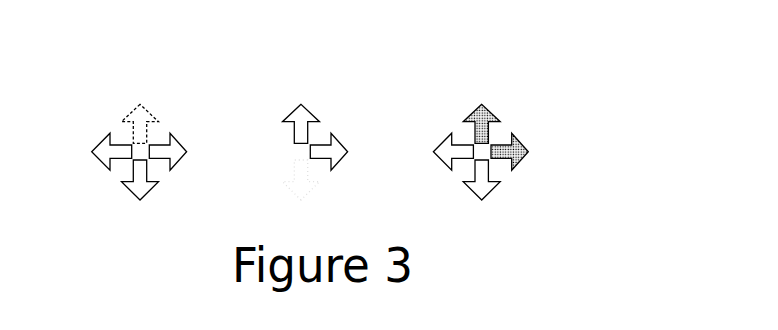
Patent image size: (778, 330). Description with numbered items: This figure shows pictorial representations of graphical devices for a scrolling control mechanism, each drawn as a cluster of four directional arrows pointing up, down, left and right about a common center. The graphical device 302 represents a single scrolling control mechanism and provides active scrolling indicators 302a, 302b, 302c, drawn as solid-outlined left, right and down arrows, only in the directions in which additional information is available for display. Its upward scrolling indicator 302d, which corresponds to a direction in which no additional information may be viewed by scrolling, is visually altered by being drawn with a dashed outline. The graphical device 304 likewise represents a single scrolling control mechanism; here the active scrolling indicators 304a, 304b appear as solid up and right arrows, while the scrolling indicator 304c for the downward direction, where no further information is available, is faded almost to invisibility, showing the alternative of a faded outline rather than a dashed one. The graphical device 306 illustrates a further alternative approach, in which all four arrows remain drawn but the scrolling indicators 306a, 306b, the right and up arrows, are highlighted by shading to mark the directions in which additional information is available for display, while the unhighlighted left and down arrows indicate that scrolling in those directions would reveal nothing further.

The graphical device 302 is at (170, 98).
The active scrolling indicator 302a is at (103, 140).
The active scrolling indicator 302b is at (177, 140).
The active scrolling indicator 302c is at (148, 190).
The scrolling indicator 302d is at (135, 110).
The graphical device 304 is at (333, 97).
The active scrolling indicator 304a is at (292, 113).
The active scrolling indicator 304b is at (340, 140).
The scrolling indicator 304c is at (312, 192).
The graphical device 306 is at (513, 98).
The highlighted scrolling indicator 306a is at (522, 140).
The highlighted scrolling indicator 306b is at (473, 115).